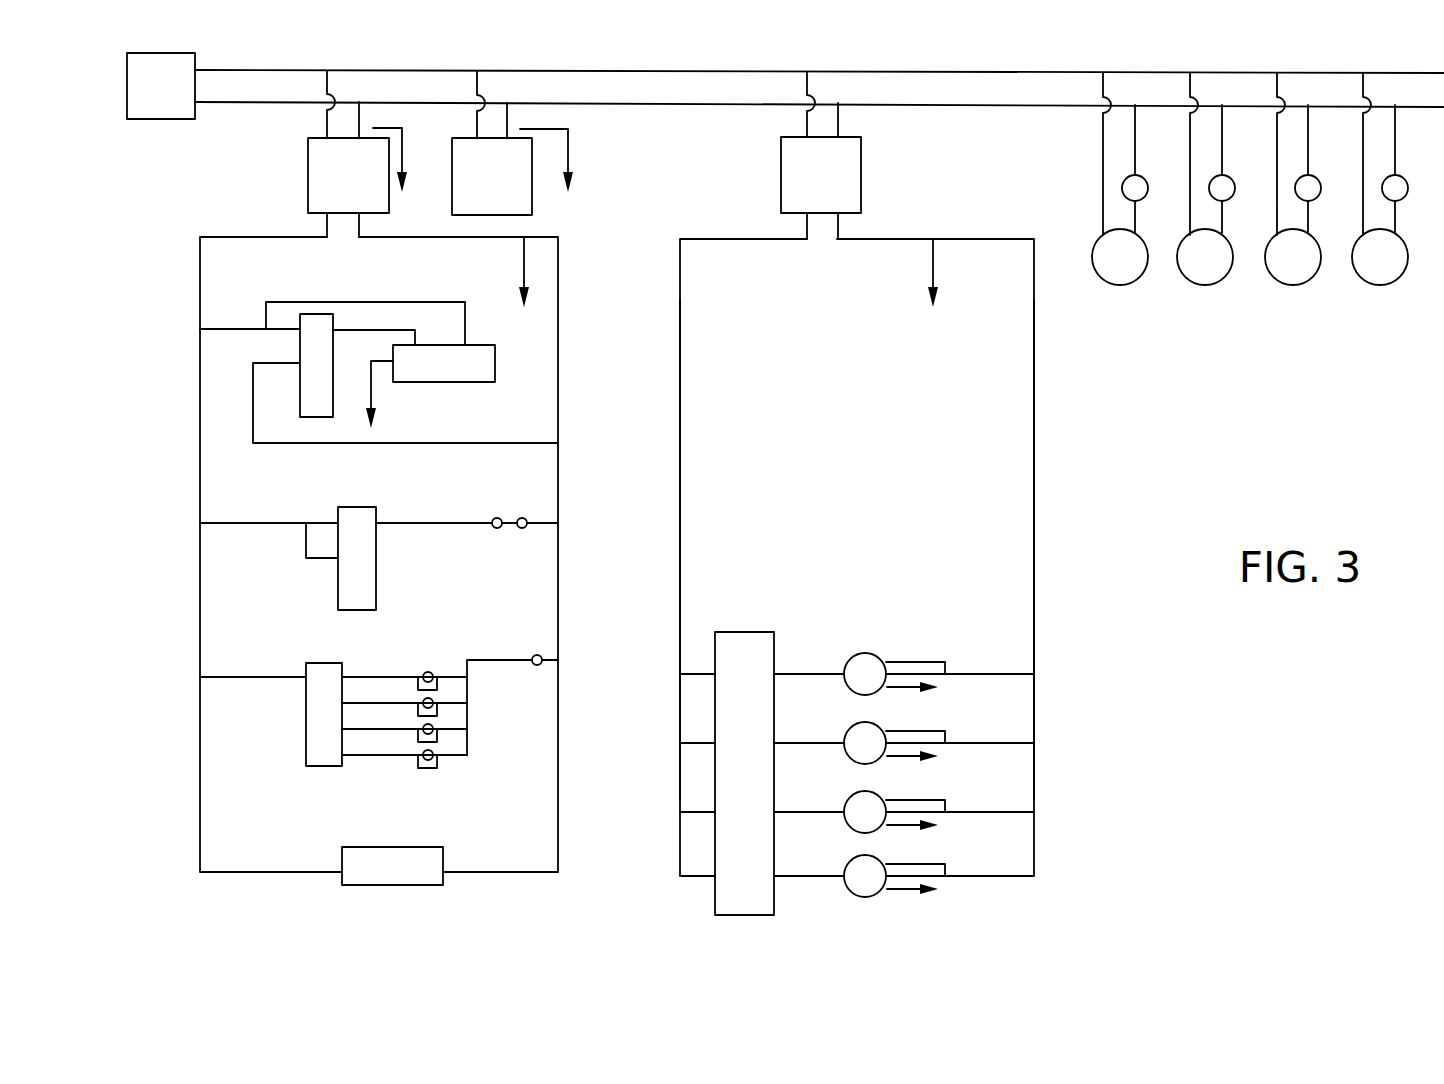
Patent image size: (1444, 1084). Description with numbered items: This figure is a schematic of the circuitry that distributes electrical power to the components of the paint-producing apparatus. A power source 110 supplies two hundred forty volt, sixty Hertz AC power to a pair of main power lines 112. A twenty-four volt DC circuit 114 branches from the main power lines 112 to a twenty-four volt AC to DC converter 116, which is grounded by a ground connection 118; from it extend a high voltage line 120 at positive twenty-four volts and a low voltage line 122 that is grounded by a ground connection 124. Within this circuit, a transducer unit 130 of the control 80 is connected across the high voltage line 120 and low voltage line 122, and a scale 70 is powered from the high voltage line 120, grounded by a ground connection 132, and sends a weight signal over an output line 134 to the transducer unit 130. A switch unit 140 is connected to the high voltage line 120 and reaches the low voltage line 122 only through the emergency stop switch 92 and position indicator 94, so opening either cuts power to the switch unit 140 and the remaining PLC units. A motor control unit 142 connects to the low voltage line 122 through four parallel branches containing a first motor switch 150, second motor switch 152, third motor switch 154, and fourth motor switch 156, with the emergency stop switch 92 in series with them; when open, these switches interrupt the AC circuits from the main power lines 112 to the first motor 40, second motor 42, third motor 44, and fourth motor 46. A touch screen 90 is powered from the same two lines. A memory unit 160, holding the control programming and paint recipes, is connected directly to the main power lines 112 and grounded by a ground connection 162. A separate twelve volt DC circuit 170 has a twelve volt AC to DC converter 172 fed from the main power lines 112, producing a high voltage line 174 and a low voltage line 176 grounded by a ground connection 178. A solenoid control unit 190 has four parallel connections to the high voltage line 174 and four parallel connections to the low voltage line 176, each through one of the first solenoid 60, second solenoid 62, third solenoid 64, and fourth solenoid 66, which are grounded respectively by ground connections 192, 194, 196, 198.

The power source 110 is at (162, 119).
The main power lines 112 is at (265, 73).
The 24 volt AC to DC converter 116 is at (308, 183).
The ground connection 118 is at (402, 147).
The memory unit 160 is at (532, 205).
The ground connection 162 is at (568, 153).
The 12 volt AC to DC converter 172 is at (781, 173).
The high voltage line 120 is at (200, 297).
The low voltage line 122 is at (558, 413).
The ground connection 124 is at (524, 262).
The transducer unit 130 is at (318, 314).
The ground connection 132 is at (372, 386).
The output line 134 is at (369, 330).
The scale 70 is at (441, 382).
The position indicator 94 is at (497, 518).
The emergency stop switch 92 is at (537, 655).
The switch unit 140 is at (338, 585).
The motor control unit 142 is at (306, 722).
The first motor switch 150 is at (435, 678).
The second motor switch 152 is at (435, 704).
The third motor switch 154 is at (435, 730).
The fourth motor switch 156 is at (435, 765).
The touch screen 90 is at (381, 847).
The 12 volt DC circuit 170 is at (1100, 512).
The high voltage line 174 is at (680, 510).
The low voltage line 176 is at (1034, 458).
The ground connection 178 is at (933, 268).
The solenoid control unit 190 is at (715, 722).
The fourth solenoid 66 is at (849, 692).
The third solenoid 64 is at (849, 761).
The second solenoid 62 is at (849, 830).
The first solenoid 60 is at (865, 897).
The ground connection 198 is at (898, 695).
The ground connection 196 is at (898, 764).
The ground connection 194 is at (898, 833).
The ground connection 192 is at (898, 897).
The 24 volt DC circuit 114 is at (611, 768).
The control 80 is at (1133, 654).
The first motor 40 is at (1118, 285).
The second motor 42 is at (1203, 285).
The third motor 44 is at (1291, 285).
The fourth motor 46 is at (1378, 285).